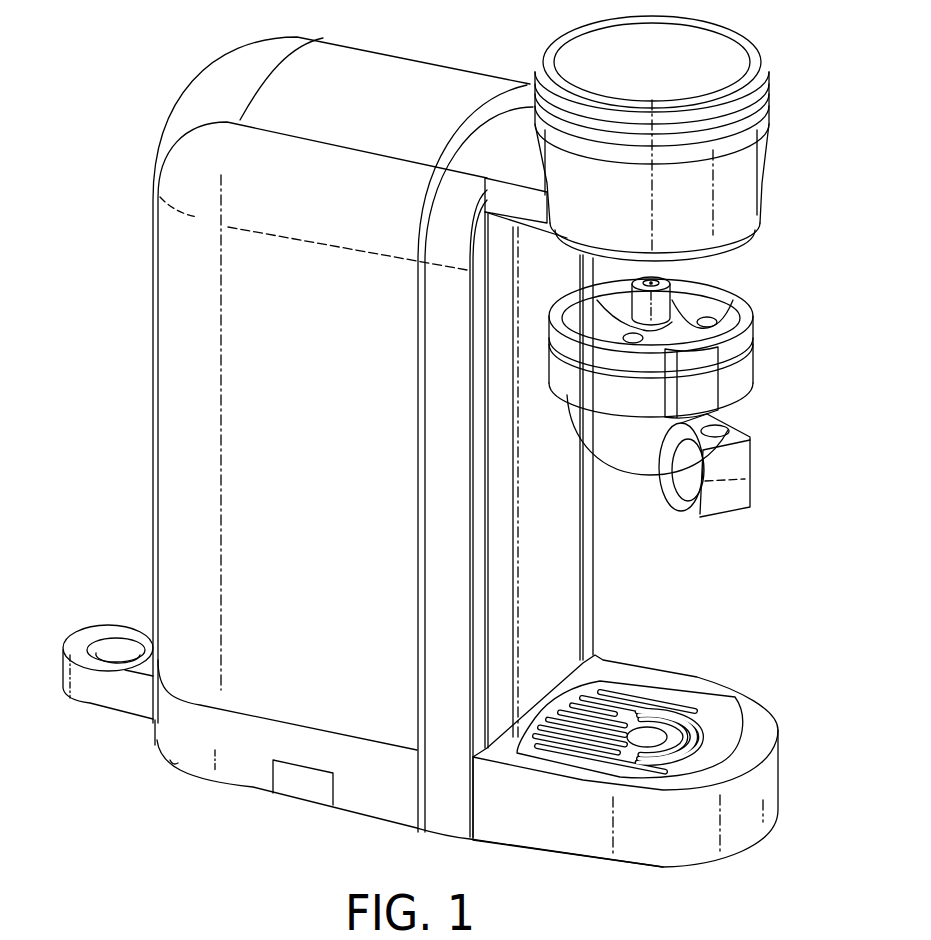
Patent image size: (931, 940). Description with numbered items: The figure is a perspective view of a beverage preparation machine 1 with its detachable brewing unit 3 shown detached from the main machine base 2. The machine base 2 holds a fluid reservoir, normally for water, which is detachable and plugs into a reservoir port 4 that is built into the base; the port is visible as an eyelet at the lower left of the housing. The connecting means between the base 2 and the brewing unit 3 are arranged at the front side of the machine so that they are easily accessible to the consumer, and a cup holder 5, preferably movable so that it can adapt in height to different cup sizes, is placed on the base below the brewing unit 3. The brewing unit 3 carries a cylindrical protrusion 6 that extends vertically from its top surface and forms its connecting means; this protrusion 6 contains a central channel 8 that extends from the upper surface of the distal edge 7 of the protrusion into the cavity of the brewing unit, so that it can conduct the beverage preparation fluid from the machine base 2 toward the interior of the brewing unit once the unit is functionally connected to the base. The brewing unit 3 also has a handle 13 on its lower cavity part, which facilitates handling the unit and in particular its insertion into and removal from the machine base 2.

The beverage preparation machine 1 is at (102, 325).
The main machine base 2 is at (335, 474).
The detachable brewing unit 3 is at (774, 348).
The reservoir port 4 is at (82, 685).
The cup holder 5 is at (636, 700).
The cylindrical protrusion 6 is at (660, 300).
The distal edge 7 is at (637, 279).
The central channel 8 is at (675, 276).
The handle 13 is at (740, 460).